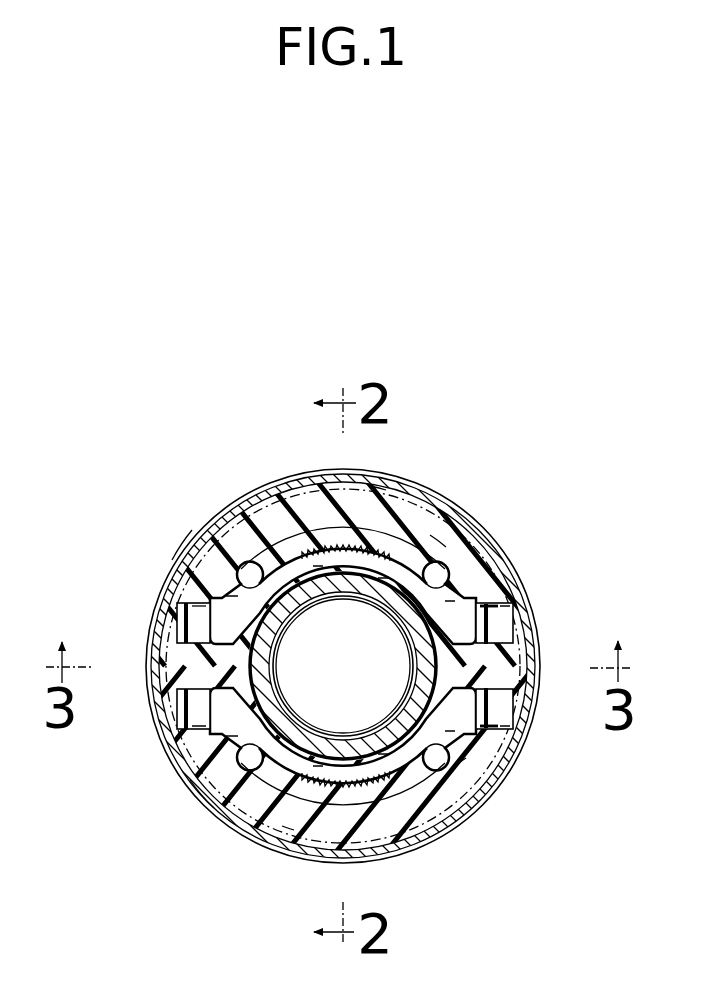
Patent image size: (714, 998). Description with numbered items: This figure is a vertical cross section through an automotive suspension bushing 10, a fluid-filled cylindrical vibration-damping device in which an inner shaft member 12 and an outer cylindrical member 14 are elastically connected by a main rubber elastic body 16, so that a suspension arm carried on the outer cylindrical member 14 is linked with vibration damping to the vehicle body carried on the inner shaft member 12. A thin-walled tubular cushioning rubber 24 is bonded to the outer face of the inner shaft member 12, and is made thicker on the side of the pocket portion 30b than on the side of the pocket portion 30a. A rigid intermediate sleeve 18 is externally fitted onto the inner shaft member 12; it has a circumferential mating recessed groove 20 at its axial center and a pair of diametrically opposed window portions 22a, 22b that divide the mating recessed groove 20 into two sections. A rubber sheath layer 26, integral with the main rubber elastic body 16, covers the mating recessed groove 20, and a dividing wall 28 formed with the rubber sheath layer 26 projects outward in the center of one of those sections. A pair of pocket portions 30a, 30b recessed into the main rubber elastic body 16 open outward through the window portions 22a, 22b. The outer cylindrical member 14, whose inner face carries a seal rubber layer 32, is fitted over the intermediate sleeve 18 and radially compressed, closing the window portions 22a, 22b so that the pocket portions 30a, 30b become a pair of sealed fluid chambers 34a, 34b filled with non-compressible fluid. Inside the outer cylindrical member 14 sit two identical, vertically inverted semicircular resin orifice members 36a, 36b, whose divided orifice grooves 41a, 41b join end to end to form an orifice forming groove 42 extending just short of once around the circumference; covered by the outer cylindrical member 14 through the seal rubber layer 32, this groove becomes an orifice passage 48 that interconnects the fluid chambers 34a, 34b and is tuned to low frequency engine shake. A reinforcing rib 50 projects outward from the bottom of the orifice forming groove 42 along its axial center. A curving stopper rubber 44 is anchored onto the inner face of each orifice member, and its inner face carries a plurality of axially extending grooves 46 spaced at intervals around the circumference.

The suspension bushing 10 is at (528, 517).
The inner shaft member 12 is at (410, 627).
The outer cylindrical member 14 is at (500, 761).
The main rubber elastic body 16 is at (216, 724).
The intermediate sleeve 18 is at (187, 627).
The mating recessed groove 20 is at (178, 684).
The window portion 22a is at (487, 613).
The window portion 22b is at (195, 711).
The cushioning rubber 24 is at (278, 698).
The rubber sheath layer 26 is at (500, 716).
The dividing wall 28 is at (192, 645).
The pocket portion 30a is at (478, 637).
The pocket portion 30b is at (462, 696).
The seal rubber layer 32 is at (206, 793).
The fluid chamber 34a is at (216, 630).
The fluid chamber 34b is at (221, 734).
The orifice member 36a is at (440, 540).
The orifice member 36b is at (460, 776).
The divided orifice groove 41a is at (304, 482).
The divided orifice groove 41b is at (381, 832).
The orifice forming groove 42 is at (380, 490).
The stopper rubber 44 is at (305, 566).
The grooves 46 is at (283, 570).
The orifice passage 48 is at (192, 566).
The reinforcing rib 50 is at (288, 833).